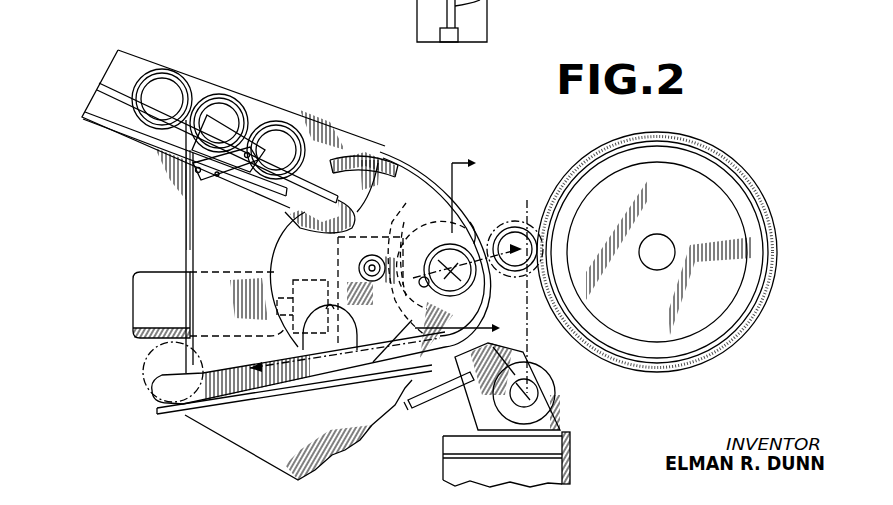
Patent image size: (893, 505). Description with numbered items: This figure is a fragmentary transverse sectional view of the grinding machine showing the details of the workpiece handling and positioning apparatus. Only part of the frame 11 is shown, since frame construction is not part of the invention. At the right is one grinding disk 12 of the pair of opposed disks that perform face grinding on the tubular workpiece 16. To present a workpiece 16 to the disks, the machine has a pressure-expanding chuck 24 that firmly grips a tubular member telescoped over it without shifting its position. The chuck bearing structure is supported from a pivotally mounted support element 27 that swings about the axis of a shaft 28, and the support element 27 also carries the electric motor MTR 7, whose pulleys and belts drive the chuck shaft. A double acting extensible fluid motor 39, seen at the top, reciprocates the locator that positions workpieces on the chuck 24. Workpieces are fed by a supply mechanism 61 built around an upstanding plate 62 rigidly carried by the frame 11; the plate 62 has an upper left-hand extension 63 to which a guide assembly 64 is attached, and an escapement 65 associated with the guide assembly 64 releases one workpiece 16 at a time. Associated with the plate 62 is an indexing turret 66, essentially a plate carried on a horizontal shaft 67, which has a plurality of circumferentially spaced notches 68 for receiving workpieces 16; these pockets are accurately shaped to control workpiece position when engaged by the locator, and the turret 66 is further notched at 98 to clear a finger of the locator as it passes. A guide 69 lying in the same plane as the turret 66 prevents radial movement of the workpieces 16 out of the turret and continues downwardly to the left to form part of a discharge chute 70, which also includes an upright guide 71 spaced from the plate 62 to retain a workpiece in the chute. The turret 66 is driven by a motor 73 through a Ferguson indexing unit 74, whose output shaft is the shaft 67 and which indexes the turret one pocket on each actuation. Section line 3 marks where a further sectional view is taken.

The section line 3- 3 is at (457, 247).
The electric motor MTR 7 is at (432, 395).
The frame 11 is at (578, 460).
The grinding disk 12 is at (767, 198).
The workpiece 16 is at (172, 70).
The chuck 24 is at (530, 200).
The support element 27 is at (527, 352).
The shaft 28 is at (540, 385).
The double acting extensible fluid motor 39 is at (470, 21).
The workpiece supply mechanism 61 is at (265, 90).
The upstanding plate 62 is at (315, 125).
The extension 63 is at (143, 55).
The guide assembly 64 is at (97, 88).
The escapement 65 is at (236, 192).
The indexing turret 66 is at (400, 160).
The shaft 67 is at (359, 267).
The notches 68 is at (454, 224).
The guide 69 is at (474, 218).
The discharge chute 70 is at (155, 420).
The upright guide 71 is at (318, 378).
The motor 73 is at (150, 301).
The Ferguson indexing unit 74 is at (406, 253).
The notch 98 is at (392, 162).